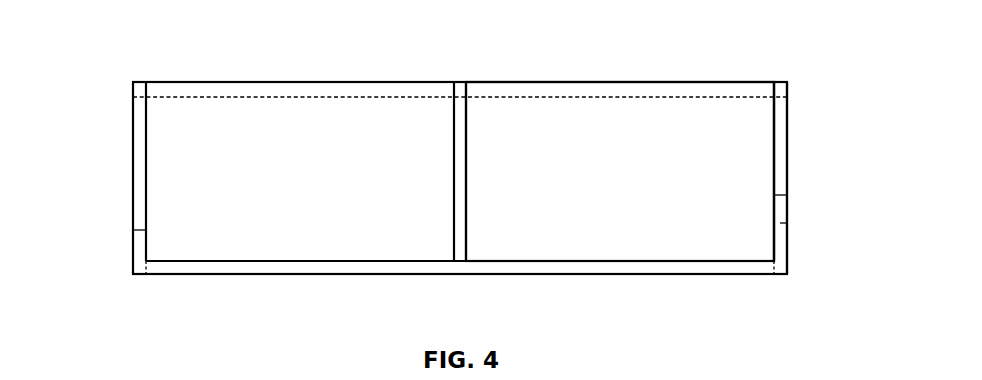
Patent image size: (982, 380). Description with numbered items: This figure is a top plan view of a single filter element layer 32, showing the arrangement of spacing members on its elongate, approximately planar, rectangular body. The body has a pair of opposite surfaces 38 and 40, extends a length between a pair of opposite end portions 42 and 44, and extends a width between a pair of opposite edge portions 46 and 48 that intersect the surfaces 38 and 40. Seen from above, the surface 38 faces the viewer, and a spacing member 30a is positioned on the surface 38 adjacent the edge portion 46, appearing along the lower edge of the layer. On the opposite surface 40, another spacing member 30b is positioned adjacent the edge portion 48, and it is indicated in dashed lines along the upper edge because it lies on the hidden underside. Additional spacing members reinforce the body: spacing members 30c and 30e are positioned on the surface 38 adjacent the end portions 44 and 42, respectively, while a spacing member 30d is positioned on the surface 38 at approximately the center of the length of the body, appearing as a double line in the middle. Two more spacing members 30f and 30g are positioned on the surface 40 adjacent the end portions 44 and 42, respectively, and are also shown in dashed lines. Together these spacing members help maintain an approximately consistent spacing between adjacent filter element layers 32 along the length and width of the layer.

The spacing member 30a is at (555, 268).
The spacing member 30b is at (572, 92).
The spacing member 30c is at (139, 182).
The spacing member 30d is at (460, 182).
The spacing member 30e is at (780, 128).
The spacing member 30f is at (134, 231).
The spacing member 30g is at (787, 222).
The filter element layer 32 is at (635, 244).
The surface 38 is at (754, 166).
The surface 40 is at (758, 205).
The end portion 42 is at (794, 204).
The end portion 44 is at (122, 152).
The edge portion 46 is at (245, 284).
The edge portion 48 is at (273, 77).